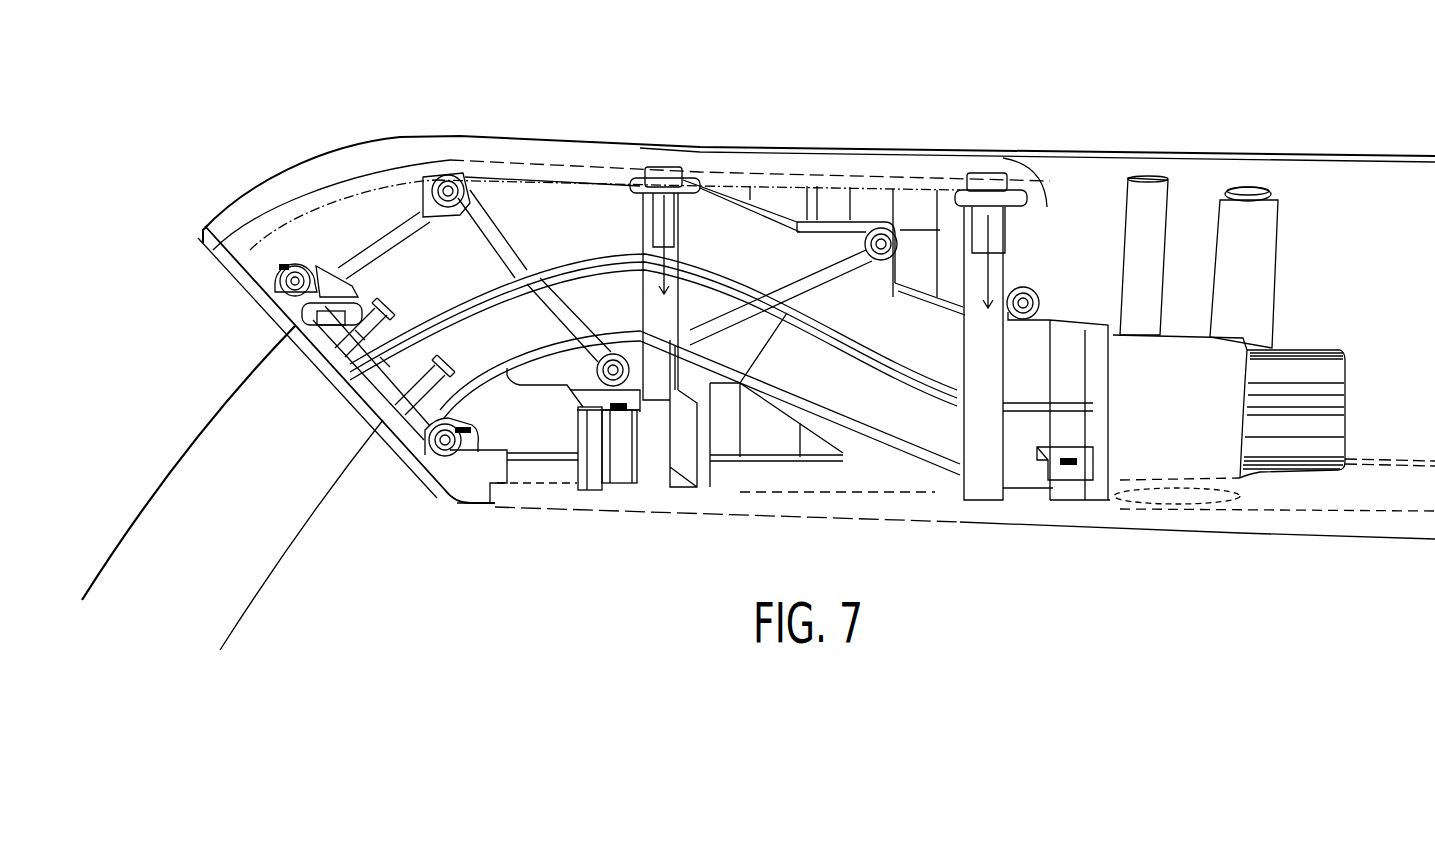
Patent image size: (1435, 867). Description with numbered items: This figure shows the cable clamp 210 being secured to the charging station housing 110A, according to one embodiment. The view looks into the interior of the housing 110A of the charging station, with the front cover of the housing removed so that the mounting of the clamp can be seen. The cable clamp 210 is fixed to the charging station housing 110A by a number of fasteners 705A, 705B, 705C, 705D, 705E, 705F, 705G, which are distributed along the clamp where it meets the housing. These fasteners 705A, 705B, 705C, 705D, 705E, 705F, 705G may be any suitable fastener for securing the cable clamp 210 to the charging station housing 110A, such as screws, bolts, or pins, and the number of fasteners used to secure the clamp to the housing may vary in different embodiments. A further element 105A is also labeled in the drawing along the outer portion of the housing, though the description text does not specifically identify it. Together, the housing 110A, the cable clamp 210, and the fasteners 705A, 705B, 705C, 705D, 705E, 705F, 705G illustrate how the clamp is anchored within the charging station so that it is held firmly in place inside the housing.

The strap 105A is at (233, 413).
The charging station housing 110A is at (263, 187).
The cable clamp 210 is at (427, 230).
The fastener 705A is at (310, 277).
The fastener 705B is at (330, 283).
The fastener 705C is at (463, 450).
The fastener 705D is at (487, 463).
The fastener 705E is at (583, 400).
The fastener 705F is at (623, 413).
The fastener 705G is at (1067, 463).